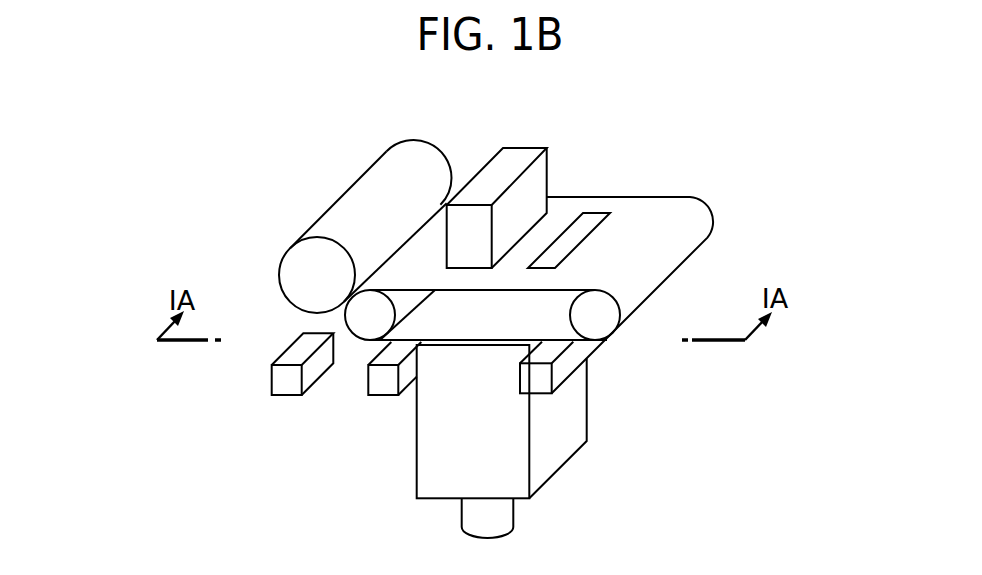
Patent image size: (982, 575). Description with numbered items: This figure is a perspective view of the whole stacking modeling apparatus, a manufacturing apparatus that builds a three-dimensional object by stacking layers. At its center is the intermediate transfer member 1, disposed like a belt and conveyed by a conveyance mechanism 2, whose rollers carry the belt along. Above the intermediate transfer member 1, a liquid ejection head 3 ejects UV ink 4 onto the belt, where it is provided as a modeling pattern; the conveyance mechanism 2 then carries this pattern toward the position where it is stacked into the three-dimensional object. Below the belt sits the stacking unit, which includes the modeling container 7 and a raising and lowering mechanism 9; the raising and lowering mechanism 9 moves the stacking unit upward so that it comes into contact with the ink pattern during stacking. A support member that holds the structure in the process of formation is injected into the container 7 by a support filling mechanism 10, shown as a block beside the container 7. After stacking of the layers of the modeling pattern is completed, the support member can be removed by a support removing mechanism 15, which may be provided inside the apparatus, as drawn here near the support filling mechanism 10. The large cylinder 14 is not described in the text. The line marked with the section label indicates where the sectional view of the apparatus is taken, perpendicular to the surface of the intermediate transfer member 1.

The intermediate transfer member 1 is at (637, 205).
The conveyance mechanism 2 is at (357, 323).
The liquid ejection head 3 is at (515, 157).
The UV ink 4 is at (592, 218).
The container 7 is at (582, 406).
The raising and lowering mechanism 9 is at (507, 512).
The support filling mechanism 10 is at (383, 388).
The roller 14 is at (287, 277).
The support removing mechanism 15 is at (287, 387).